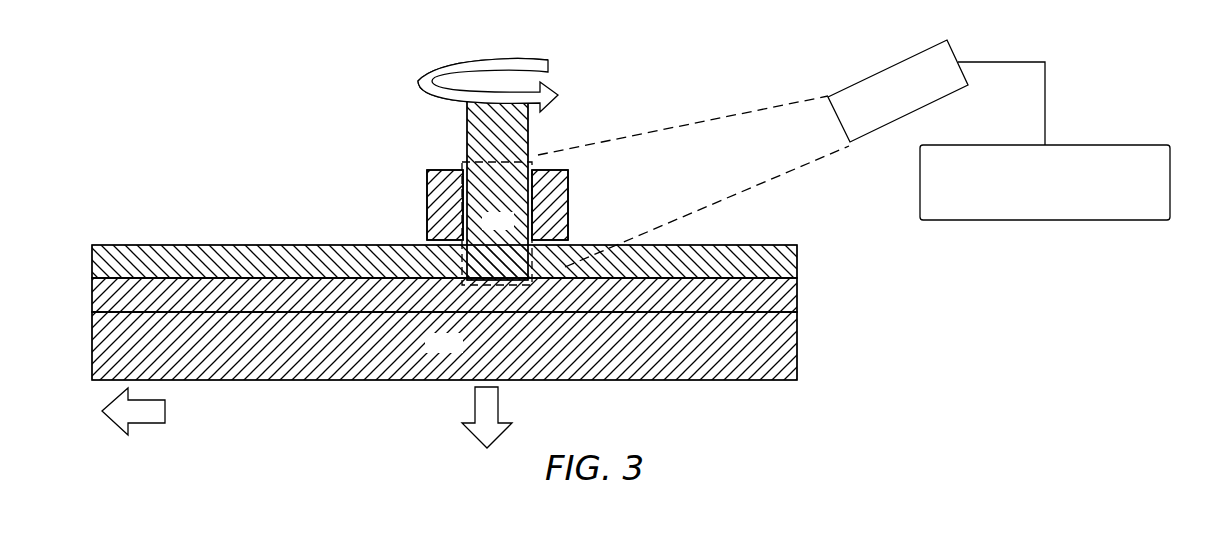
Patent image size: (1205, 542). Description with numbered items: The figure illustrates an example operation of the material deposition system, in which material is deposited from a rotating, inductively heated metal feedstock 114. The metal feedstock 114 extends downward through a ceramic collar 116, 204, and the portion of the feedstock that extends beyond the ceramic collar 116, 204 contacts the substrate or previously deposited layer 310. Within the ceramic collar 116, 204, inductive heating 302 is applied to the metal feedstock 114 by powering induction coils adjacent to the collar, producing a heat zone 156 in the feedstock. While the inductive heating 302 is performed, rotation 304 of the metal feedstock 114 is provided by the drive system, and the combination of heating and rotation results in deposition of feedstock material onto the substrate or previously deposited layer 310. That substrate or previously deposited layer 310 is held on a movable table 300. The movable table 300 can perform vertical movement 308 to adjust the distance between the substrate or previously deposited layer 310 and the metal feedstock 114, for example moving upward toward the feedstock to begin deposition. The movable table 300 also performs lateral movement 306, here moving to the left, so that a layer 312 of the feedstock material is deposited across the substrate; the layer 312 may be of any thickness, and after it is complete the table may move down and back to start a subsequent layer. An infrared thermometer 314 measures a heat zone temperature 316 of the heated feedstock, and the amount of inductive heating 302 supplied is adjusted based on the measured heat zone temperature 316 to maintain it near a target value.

The metal feedstock 114 is at (498, 126).
The ceramic collar 116 is at (442, 213).
The ceramic collar 204 is at (439, 205).
The heat zone 156 is at (510, 230).
The movable table 300 is at (430, 352).
The inductive heating 302 is at (598, 202).
The rotation 304 is at (463, 62).
The lateral movement 306 is at (135, 425).
The vertical movement 308 is at (499, 405).
The substrate or previously deposited layer 310 is at (798, 298).
The layer 312 is at (104, 263).
The infrared thermometer 314 is at (884, 106).
The heat zone temperature 316 is at (1032, 203).